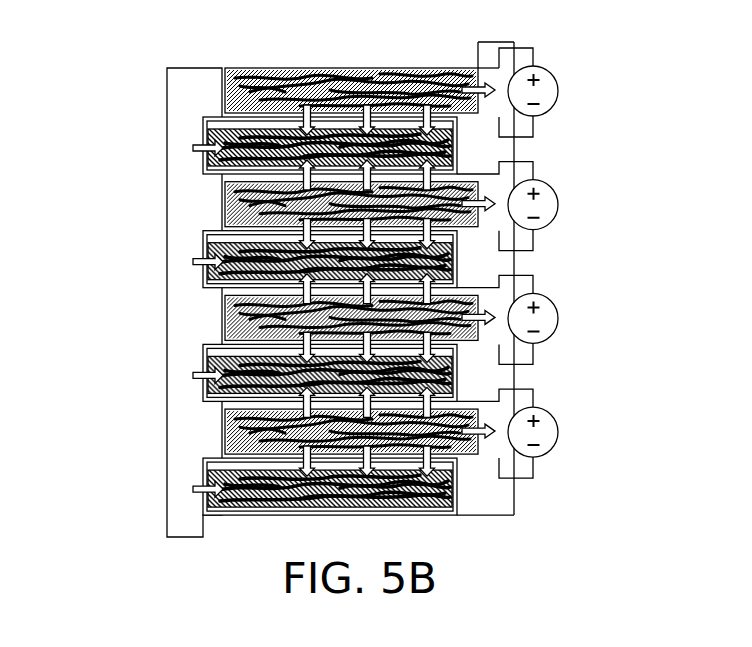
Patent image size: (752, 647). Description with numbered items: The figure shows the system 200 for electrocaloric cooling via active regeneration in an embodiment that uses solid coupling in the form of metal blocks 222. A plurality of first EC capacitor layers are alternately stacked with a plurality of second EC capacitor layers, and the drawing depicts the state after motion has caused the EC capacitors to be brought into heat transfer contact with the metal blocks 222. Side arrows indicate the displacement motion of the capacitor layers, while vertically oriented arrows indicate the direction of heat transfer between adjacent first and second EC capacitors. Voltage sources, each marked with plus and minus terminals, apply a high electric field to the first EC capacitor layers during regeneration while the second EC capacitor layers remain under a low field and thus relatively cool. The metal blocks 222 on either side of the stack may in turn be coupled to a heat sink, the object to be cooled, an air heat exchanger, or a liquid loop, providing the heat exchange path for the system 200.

The system for electrocaloric cooling via active regeneration 200 is at (361, 276).
The metal blocks 222 is at (194, 67).